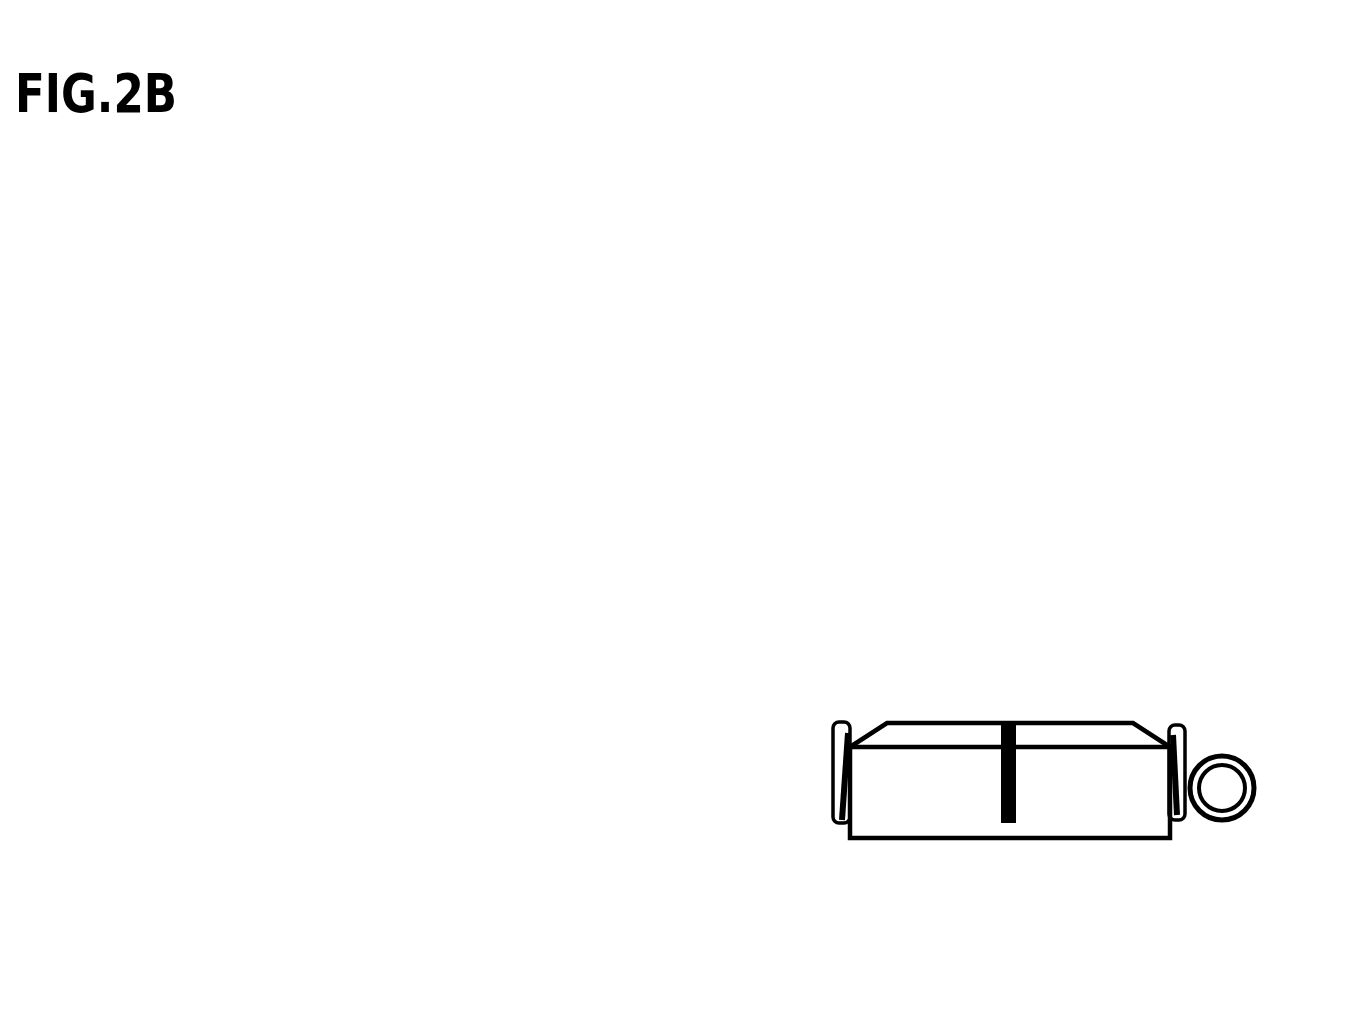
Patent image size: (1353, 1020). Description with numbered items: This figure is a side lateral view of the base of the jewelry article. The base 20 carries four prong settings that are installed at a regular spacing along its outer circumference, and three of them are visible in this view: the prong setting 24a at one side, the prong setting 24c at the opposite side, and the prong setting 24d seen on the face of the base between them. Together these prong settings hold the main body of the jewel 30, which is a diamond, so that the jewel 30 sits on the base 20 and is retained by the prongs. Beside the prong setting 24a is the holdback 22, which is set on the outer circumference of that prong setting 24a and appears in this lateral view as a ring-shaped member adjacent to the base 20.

The base 20 is at (1138, 817).
The holdback 22 is at (1232, 760).
The prong setting 24a is at (1182, 727).
The prong setting 24c is at (842, 722).
The prong setting 24d is at (1015, 838).
The jewel 30 is at (965, 733).